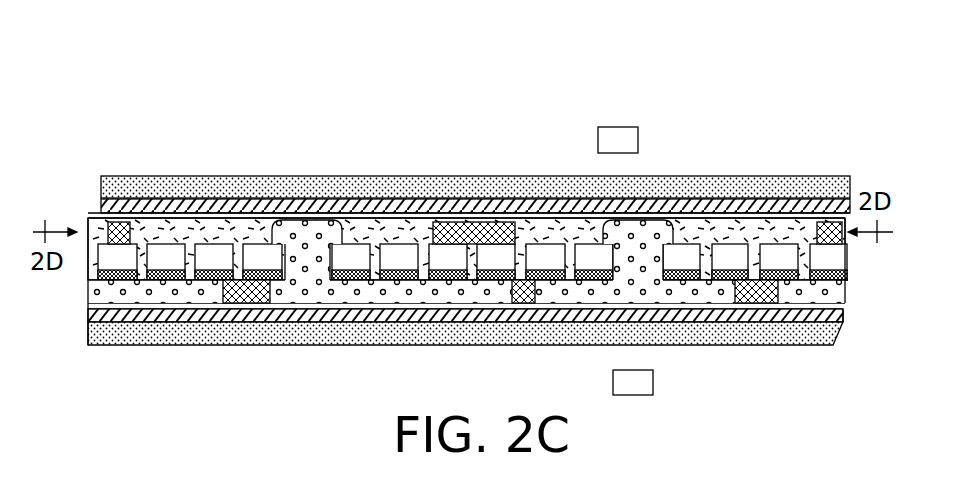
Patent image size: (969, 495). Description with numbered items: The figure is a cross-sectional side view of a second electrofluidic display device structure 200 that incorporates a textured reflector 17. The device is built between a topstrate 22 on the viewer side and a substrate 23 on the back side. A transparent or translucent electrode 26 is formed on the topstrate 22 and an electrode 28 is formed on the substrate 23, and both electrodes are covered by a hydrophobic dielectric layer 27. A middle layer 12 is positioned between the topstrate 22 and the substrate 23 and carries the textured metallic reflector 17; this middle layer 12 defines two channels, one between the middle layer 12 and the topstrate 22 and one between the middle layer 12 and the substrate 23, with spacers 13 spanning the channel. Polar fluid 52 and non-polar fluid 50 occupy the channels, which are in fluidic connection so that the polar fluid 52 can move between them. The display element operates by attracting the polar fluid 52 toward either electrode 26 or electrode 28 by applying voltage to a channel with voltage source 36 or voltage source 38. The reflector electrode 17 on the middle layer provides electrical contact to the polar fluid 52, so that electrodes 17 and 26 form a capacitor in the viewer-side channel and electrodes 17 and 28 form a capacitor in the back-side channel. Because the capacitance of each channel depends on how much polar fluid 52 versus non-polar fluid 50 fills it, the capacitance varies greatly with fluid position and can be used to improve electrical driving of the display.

The electrofluidic display device structure 200 is at (142, 122).
The topstrate 22 is at (175, 185).
The transparent or translucent electrode 26 is at (223, 207).
The hydrophobic dielectric layer 27 is at (277, 217).
The middle layer 12 is at (403, 258).
The spacers 13 is at (448, 232).
The voltage source 36 is at (690, 203).
The voltage source 38 is at (710, 320).
The substrate 23 is at (123, 332).
The electrode 28 is at (280, 317).
The textured reflector 17 is at (345, 275).
The non-polar fluid 50 is at (466, 249).
The polar fluid 52 is at (472, 250).